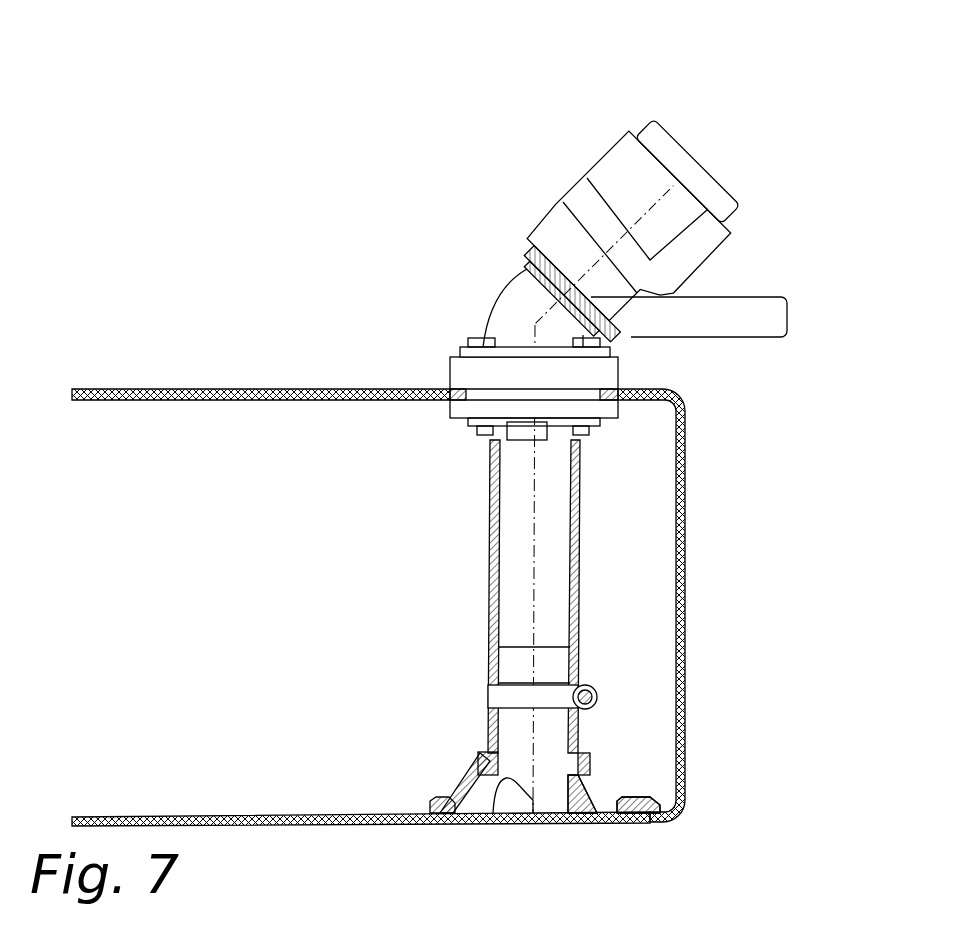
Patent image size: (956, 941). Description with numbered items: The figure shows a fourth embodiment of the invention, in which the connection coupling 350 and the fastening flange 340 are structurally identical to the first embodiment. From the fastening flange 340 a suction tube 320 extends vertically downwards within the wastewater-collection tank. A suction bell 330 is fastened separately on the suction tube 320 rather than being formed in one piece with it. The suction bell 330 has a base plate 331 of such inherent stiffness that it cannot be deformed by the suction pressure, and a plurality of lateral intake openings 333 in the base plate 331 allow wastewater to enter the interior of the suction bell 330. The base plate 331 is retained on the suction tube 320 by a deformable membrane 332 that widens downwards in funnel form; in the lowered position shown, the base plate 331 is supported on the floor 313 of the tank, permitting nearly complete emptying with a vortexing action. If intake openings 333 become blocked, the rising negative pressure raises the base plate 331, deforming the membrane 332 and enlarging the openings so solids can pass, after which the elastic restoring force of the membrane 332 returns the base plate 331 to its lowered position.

The floor 313 is at (277, 817).
The suction tube 320 is at (553, 597).
The suction bell 330 is at (618, 772).
The base plate 331 is at (582, 757).
The deformable membrane 332 is at (462, 785).
The intake openings 333 is at (630, 818).
The fastening flange 340 is at (442, 355).
The connection coupling 350 is at (583, 157).